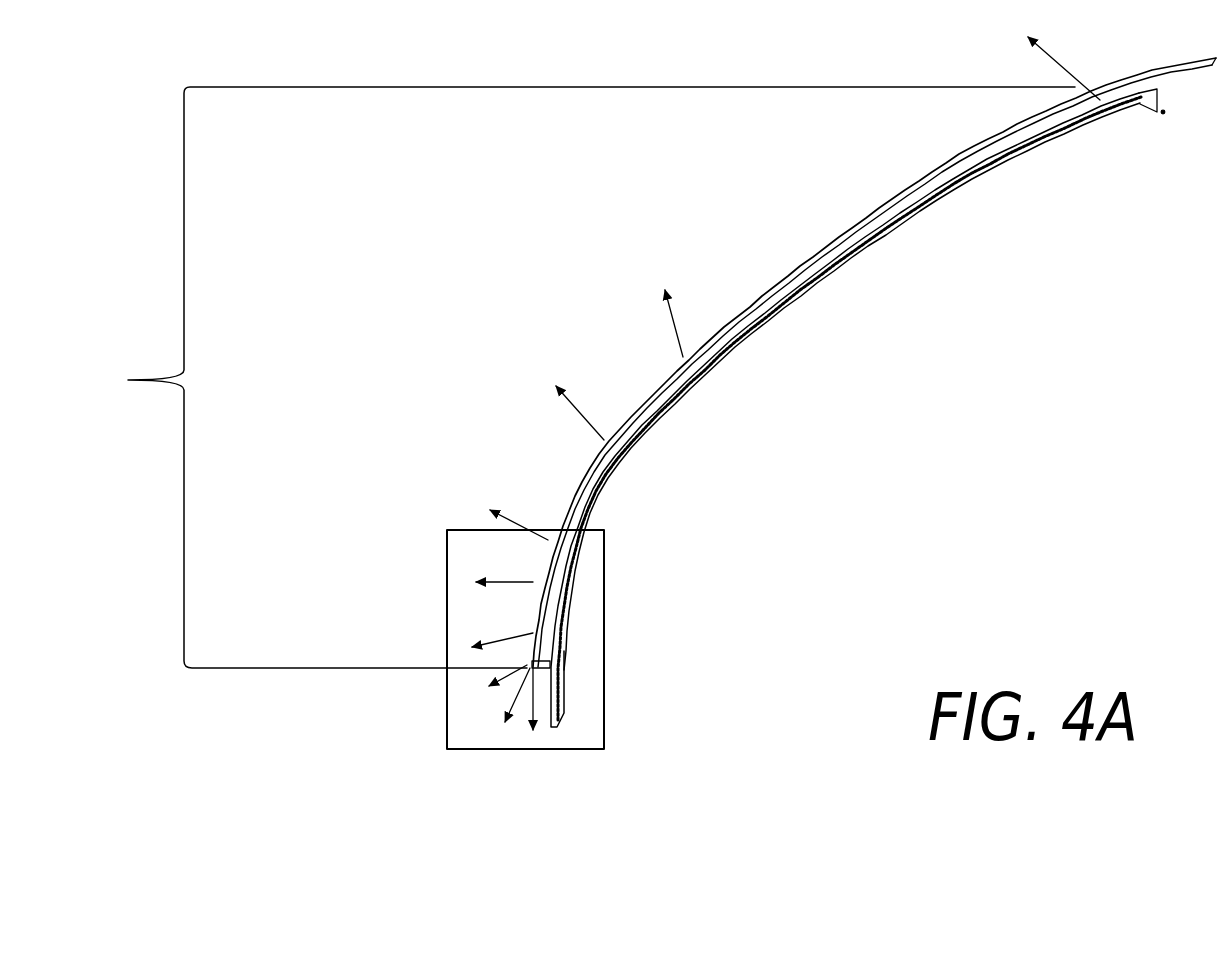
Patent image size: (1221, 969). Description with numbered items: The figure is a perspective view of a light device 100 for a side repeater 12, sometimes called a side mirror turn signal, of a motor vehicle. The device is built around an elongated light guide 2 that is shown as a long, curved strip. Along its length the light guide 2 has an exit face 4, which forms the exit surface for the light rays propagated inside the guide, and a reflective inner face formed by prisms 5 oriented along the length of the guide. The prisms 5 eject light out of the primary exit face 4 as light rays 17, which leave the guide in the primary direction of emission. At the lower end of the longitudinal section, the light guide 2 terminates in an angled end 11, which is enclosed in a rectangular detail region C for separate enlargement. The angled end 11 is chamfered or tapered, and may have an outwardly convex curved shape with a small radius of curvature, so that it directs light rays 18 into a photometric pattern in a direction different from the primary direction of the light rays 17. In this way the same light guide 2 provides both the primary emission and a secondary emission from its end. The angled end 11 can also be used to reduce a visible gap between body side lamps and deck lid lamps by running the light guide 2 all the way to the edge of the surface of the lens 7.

The light device 100 is at (874, 376).
The light guide 2 is at (836, 240).
The prisms 5 is at (727, 358).
The exit face 4 is at (586, 377).
The side repeater 12 is at (571, 448).
The lens 7 is at (667, 372).
The light rays 17 is at (683, 357).
The angled end 11 is at (500, 661).
The light rays 18 is at (530, 665).
The region C is at (605, 637).